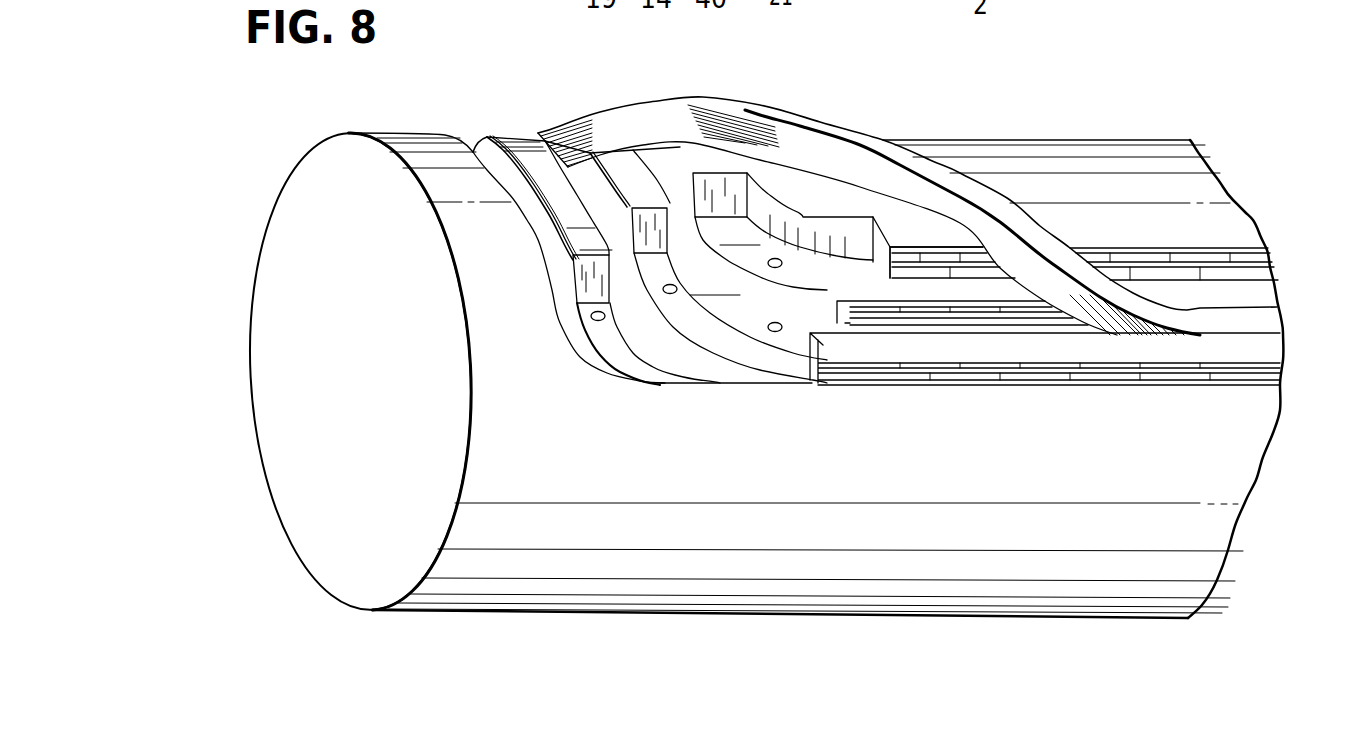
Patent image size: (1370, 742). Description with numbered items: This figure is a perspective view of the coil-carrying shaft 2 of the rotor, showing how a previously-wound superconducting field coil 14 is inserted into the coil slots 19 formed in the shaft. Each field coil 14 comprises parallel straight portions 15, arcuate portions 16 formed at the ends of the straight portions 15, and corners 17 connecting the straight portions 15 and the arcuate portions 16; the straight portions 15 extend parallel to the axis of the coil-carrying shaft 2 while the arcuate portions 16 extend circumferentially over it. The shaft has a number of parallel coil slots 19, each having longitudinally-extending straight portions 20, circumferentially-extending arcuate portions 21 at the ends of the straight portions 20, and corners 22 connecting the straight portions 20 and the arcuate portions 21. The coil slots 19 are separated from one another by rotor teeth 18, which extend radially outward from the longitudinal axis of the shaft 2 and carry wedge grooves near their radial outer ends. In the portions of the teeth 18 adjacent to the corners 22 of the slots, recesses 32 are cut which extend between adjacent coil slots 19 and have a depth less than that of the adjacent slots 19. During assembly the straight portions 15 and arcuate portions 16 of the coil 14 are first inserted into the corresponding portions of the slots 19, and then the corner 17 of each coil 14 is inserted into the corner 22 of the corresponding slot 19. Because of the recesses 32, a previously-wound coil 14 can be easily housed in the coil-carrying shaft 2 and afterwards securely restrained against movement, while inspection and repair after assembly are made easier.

The coil-carrying shaft 2 is at (1247, 465).
The superconducting field coil 14 is at (1002, 212).
The straight portion 15 is at (1268, 325).
The arcuate portion 16 is at (571, 114).
The corner 17 is at (873, 145).
The rotor tooth 18 is at (530, 150).
The coil slot 19 is at (907, 300).
The straight portion 20 is at (1240, 273).
The arcuate portion 21 is at (474, 150).
The corner 22 is at (693, 360).
The recess 32 is at (658, 368).